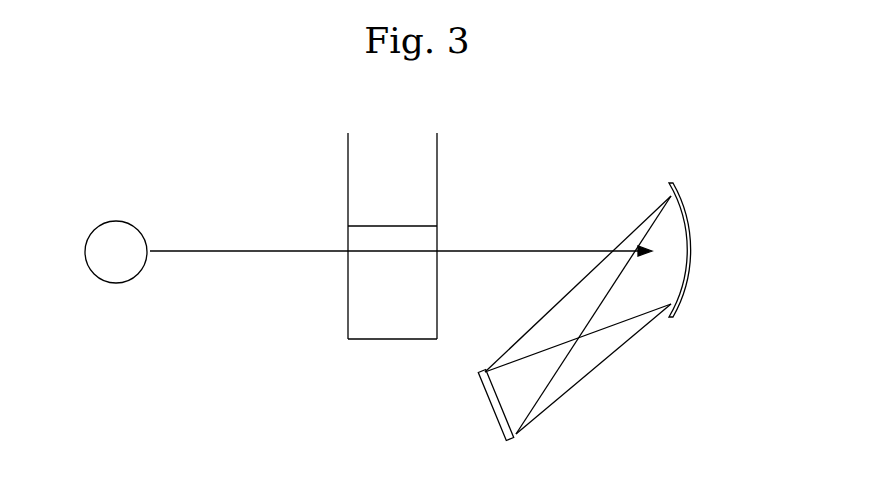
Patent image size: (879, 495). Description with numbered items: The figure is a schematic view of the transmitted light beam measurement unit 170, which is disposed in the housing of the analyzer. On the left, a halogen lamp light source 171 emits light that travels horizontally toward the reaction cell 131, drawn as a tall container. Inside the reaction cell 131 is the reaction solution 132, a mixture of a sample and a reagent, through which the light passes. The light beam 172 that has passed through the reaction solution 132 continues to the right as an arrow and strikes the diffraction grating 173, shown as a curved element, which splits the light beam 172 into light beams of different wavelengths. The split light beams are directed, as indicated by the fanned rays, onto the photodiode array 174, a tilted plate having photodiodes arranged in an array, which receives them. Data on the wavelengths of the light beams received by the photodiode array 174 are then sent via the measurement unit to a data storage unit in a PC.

The transmitted light beam measurement unit 170 is at (248, 118).
The halogen lamp light source 171 is at (103, 267).
The light beam 172 is at (517, 248).
The reaction cell 131 is at (438, 153).
The reaction solution 132 is at (353, 289).
The diffraction grating 173 is at (687, 213).
The photodiode array 174 is at (492, 403).